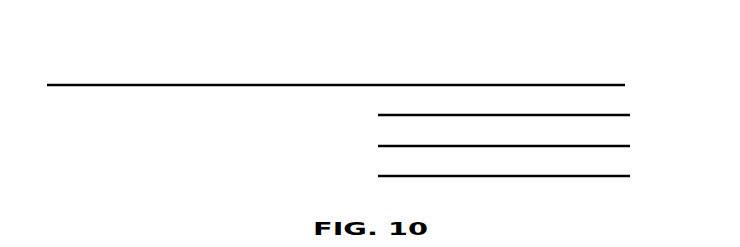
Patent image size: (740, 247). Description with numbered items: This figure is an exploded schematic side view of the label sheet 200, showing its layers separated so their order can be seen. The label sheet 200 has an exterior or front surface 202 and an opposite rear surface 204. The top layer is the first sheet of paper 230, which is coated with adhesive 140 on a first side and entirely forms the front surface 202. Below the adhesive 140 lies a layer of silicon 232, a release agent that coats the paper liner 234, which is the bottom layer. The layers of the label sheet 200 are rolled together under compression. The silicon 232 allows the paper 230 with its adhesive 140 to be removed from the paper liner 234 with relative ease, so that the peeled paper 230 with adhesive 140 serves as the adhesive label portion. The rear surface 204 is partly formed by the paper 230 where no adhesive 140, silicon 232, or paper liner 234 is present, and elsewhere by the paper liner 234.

The label sheet 200 is at (108, 69).
The front surface 202 is at (126, 85).
The rear surface 204 is at (126, 85).
The first sheet of paper 230 is at (73, 86).
The adhesive 140 is at (630, 114).
The silicon 232 is at (630, 145).
The paper liner 234 is at (630, 175).